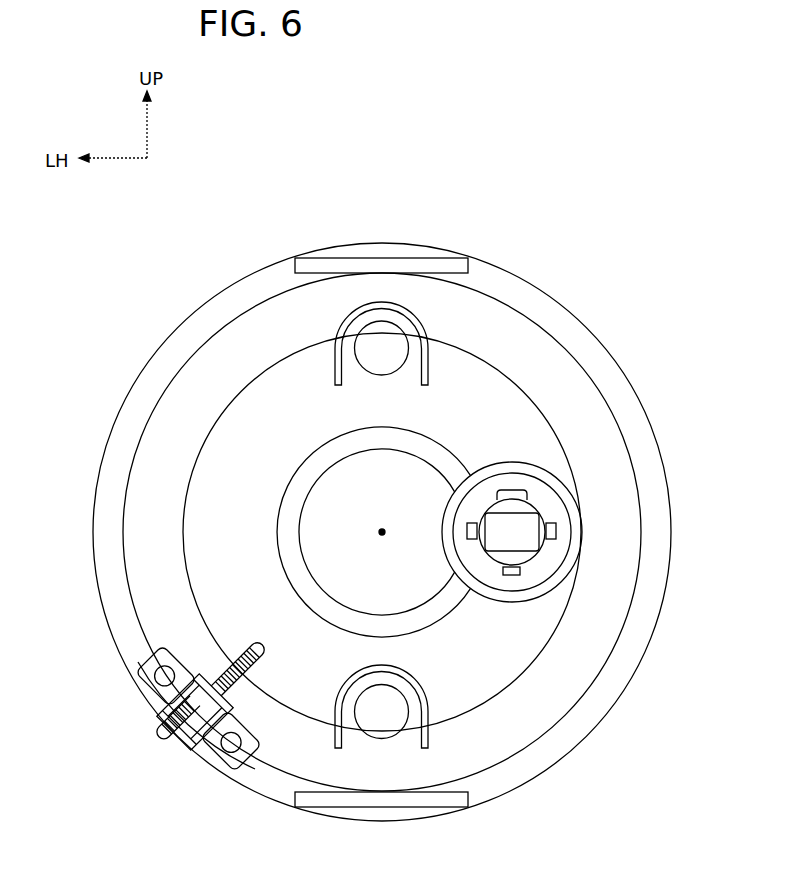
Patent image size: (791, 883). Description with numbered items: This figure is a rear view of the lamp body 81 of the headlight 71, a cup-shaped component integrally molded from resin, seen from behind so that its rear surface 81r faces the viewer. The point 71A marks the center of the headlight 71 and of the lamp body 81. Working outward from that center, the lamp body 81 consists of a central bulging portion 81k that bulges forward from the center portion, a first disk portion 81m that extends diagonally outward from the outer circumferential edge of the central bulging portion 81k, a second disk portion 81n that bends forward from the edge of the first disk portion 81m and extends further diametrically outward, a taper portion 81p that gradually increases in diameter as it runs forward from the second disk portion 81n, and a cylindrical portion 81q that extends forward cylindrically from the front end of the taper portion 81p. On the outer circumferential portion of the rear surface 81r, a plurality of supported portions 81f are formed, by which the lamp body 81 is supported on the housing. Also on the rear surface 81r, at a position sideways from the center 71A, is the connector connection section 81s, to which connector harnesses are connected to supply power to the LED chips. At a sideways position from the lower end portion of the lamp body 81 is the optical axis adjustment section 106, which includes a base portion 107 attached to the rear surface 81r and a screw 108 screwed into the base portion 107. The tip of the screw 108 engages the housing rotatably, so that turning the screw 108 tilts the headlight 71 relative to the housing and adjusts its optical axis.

The headlight 71 is at (162, 256).
The center 71A is at (382, 532).
The lamp body 81 is at (189, 318).
The supported portions 81f is at (384, 262).
The central bulging portion 81k is at (412, 483).
The first disk portion 81m is at (447, 602).
The second disk portion 81n is at (487, 678).
The taper portion 81p is at (473, 755).
The cylindrical portion 81q is at (273, 768).
The rear surface 81r is at (188, 393).
The connector connection section 81s is at (537, 508).
The optical axis adjustment section 106 is at (150, 664).
The base portion 107 is at (153, 697).
The screw 108 is at (168, 743).